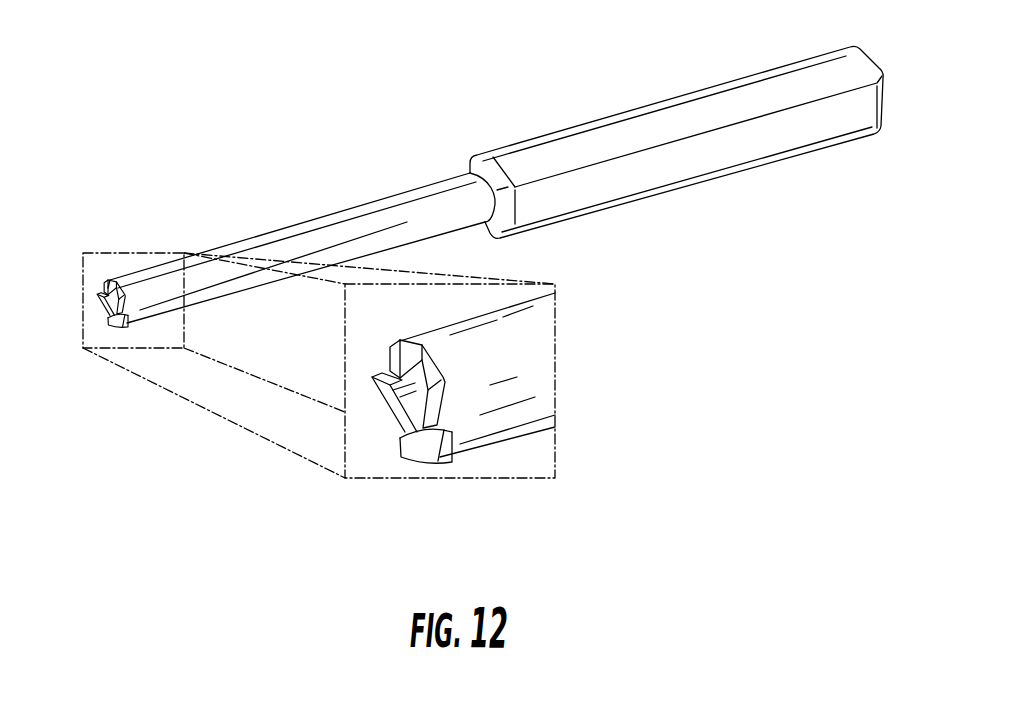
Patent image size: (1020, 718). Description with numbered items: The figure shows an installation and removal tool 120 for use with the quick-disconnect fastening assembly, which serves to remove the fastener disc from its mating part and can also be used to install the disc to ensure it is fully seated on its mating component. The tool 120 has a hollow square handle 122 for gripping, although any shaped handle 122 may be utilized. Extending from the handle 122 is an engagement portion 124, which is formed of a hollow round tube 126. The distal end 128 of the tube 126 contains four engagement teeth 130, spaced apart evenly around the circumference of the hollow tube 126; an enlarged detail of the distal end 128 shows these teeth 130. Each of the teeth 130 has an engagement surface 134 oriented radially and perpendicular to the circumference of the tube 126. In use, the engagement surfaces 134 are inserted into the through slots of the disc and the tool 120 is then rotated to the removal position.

The installation and removal tool 120 is at (522, 84).
The handle 122 is at (675, 97).
The engagement portion 124 is at (414, 340).
The hollow round tube 126 is at (310, 232).
The distal end 128 is at (94, 310).
The engagement teeth 130 is at (393, 358).
The engagement surface 134 is at (398, 446).